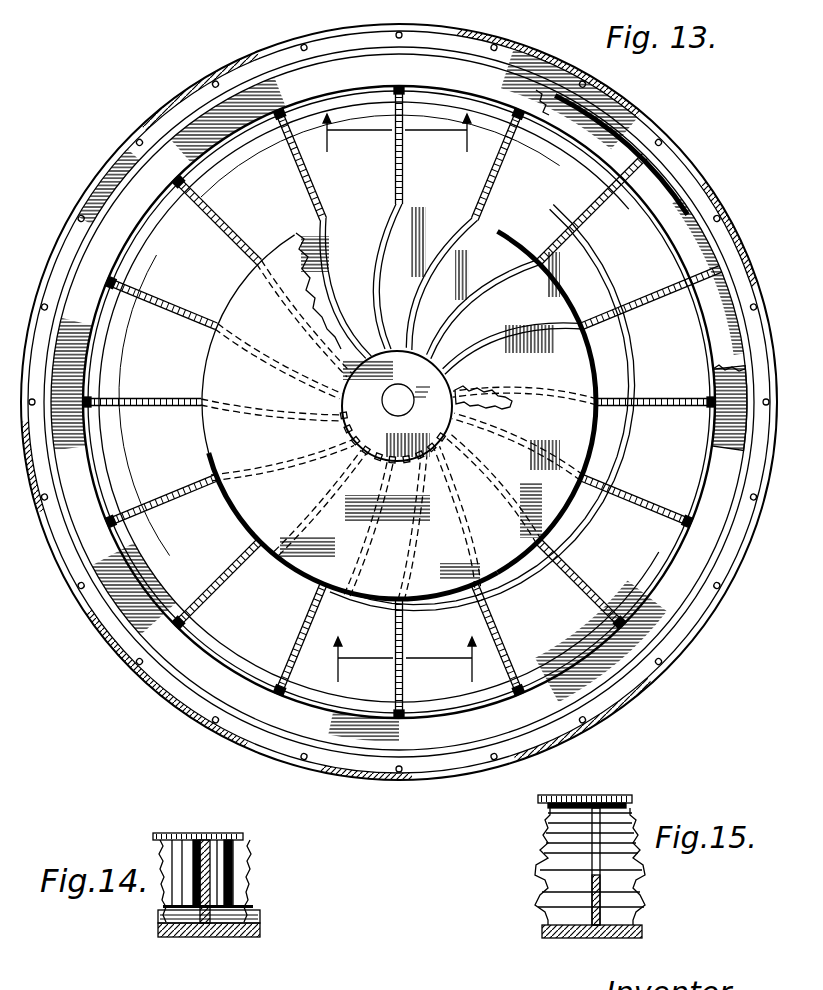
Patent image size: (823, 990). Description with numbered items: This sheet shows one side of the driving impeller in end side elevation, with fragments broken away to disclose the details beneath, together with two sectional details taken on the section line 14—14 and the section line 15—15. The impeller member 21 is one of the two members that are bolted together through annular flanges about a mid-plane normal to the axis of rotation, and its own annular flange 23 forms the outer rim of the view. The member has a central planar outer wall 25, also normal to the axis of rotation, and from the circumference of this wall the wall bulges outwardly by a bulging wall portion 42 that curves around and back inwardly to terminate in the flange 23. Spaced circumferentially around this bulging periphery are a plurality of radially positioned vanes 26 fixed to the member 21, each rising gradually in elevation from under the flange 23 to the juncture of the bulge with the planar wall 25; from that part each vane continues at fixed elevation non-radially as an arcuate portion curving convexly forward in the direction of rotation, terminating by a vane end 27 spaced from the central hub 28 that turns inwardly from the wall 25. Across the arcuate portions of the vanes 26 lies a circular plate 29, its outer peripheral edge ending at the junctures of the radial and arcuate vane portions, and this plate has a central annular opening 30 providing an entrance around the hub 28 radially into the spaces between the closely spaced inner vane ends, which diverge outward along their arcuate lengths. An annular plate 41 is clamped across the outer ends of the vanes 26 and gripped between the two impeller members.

In FIG. 13, the section line 14— 14 is at (408, 671).
In FIG. 13, the section line 15— 15 is at (397, 144).
In FIG. 13, the impeller member 21 is at (640, 116).
In FIG. 14, the impeller member 21 is at (238, 940).
In FIG. 15, the impeller member 21 is at (555, 890).
In FIG. 13, the annular flange 23 is at (677, 163).
In FIG. 13, the central planar outer wall 25 is at (568, 353).
In FIG. 13, the vanes 26 is at (584, 212).
In FIG. 14, the vanes 26 is at (226, 852).
In FIG. 15, the vanes 26 is at (628, 896).
In FIG. 13, the vane end 27 is at (433, 347).
In FIG. 13, the central hub 28 is at (387, 426).
In FIG. 13, the circular plate 29 is at (240, 292).
In FIG. 14, the circular plate 29 is at (190, 833).
In FIG. 13, the central annular opening 30 is at (345, 448).
In FIG. 13, the annular plate 41 is at (534, 104).
In FIG. 15, the annular plate 41 is at (607, 796).
In FIG. 13, the bulging wall portion 42 is at (667, 237).
In FIG. 14, the bulging wall portion 42 is at (258, 915).
In FIG. 15, the bulging wall portion 42 is at (618, 938).